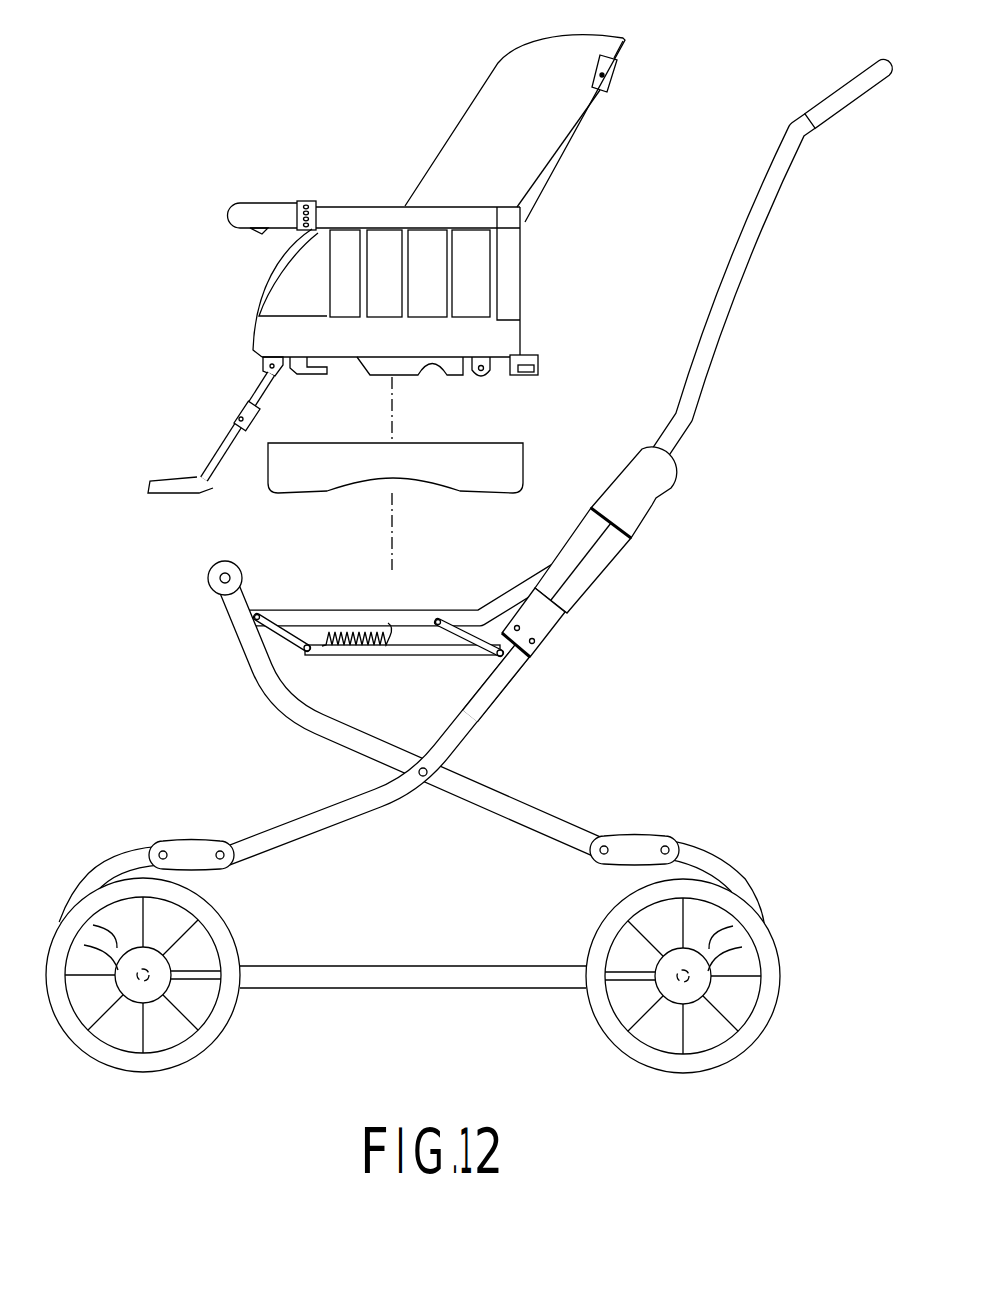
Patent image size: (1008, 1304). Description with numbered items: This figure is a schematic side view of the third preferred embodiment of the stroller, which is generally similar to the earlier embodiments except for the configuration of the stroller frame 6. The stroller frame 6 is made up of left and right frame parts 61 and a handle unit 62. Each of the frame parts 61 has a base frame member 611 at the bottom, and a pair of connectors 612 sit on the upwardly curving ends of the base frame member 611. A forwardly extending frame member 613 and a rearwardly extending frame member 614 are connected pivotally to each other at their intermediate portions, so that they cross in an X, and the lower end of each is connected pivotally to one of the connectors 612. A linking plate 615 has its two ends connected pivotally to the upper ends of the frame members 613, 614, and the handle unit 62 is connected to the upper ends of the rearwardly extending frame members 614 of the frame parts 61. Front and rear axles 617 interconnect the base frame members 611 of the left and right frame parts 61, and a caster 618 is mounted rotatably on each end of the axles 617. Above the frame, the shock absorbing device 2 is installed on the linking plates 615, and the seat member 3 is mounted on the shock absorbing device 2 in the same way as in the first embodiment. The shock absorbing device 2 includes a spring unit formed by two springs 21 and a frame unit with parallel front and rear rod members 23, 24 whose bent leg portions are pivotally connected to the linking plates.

The shock absorbing device 2 is at (418, 656).
The seat member 3 is at (547, 202).
The stroller frame 6 is at (599, 590).
The springs 21 is at (350, 632).
The front rod member 23 is at (300, 653).
The rear rod member 24 is at (505, 637).
The frame parts 61 is at (473, 725).
The handle unit 62 is at (710, 346).
The base frame member 611 is at (433, 989).
The connectors 612 is at (197, 848).
The forwardly extending frame member 613 is at (350, 745).
The rearwardly extending frame member 614 is at (497, 680).
The linking plate 615 is at (415, 610).
The axles 617 is at (143, 980).
The caster 618 is at (205, 1040).